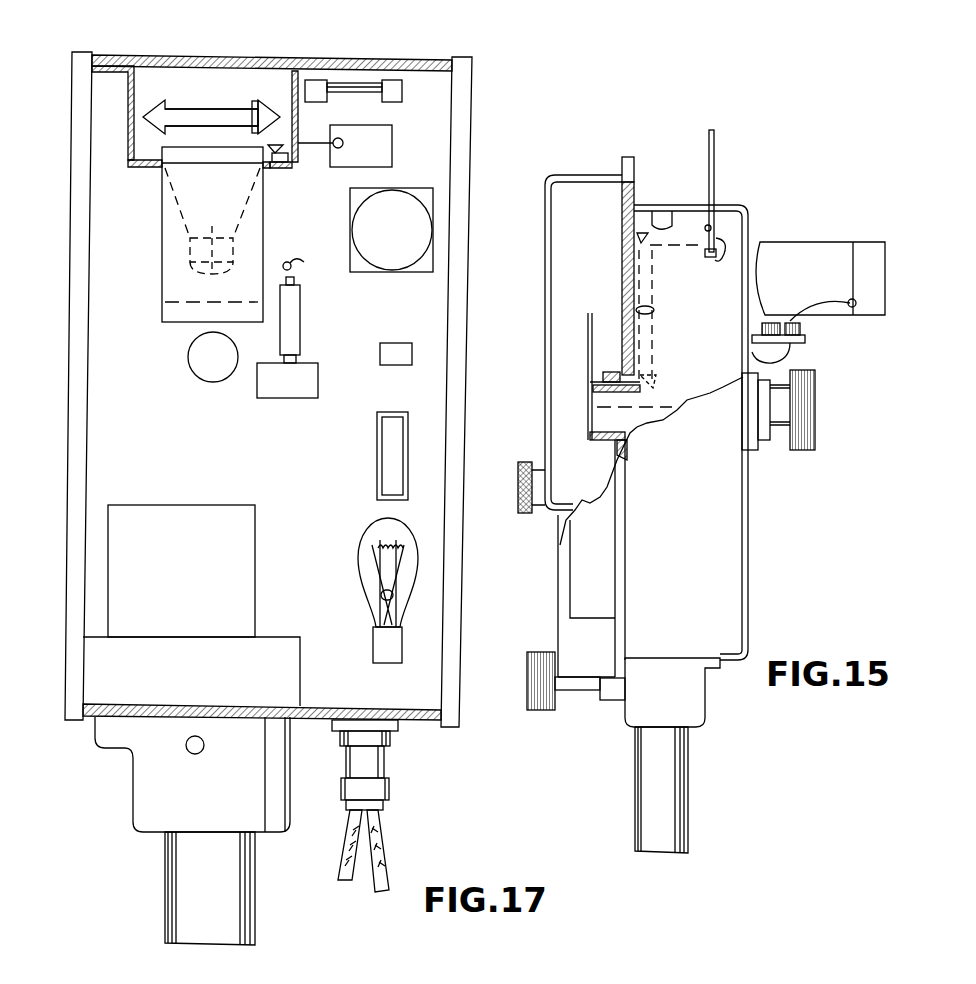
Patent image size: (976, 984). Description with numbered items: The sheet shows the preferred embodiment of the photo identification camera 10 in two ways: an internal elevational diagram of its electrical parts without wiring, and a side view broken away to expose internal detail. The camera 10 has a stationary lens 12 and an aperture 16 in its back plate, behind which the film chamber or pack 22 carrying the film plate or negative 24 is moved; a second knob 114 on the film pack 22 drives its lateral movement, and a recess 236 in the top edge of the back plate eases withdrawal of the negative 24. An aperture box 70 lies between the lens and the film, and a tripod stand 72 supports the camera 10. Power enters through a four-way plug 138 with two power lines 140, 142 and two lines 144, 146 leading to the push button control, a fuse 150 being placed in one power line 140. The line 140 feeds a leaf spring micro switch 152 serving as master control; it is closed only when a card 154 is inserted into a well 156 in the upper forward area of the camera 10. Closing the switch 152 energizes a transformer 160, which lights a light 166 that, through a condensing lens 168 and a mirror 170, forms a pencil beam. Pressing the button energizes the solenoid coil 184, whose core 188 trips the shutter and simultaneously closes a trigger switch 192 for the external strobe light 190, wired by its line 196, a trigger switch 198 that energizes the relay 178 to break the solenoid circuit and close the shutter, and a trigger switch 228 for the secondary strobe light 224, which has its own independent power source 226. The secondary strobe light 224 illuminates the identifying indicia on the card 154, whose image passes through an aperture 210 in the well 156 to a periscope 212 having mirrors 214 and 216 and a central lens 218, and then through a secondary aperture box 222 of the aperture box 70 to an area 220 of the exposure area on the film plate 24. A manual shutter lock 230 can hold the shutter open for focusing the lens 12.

In FIG. 17, the camera 10 is at (67, 546).
In FIG. 15, the camera 10 is at (758, 591).
In FIG. 15, the lens 12 is at (816, 412).
In FIG. 17, the aperture 16 is at (192, 360).
In FIG. 15, the film chamber or pack 22 is at (545, 254).
In FIG. 15, the film plate or negative 24 is at (588, 326).
In FIG. 15, the aperture box 70 is at (627, 436).
In FIG. 17, the tripod stand 72 is at (185, 871).
In FIG. 15, the tripod stand 72 is at (655, 767).
In FIG. 15, the second knob 114 is at (518, 482).
In FIG. 17, the 4-way plug 138 is at (376, 763).
In FIG. 17, the line 140 is at (320, 846).
In FIG. 17, the line 142 is at (348, 872).
In FIG. 17, the line 144 is at (430, 851).
In FIG. 17, the line 146 is at (383, 858).
In FIG. 17, the fuse 150 is at (355, 85).
In FIG. 17, the leaf spring micro switch 152 is at (310, 142).
In FIG. 15, the leaf spring micro switch 152 is at (706, 254).
In FIG. 15, the card 154 is at (714, 165).
In FIG. 17, the well 156 is at (134, 78).
In FIG. 15, the well 156 is at (721, 258).
In FIG. 17, the transformer 160 is at (154, 571).
In FIG. 17, the light 166 is at (372, 528).
In FIG. 17, the condensing lens 168 is at (390, 460).
In FIG. 17, the mirror 170 is at (394, 350).
In FIG. 17, the relay 178 is at (377, 243).
In FIG. 17, the solenoid coil 184 is at (290, 316).
In FIG. 17, the core 188 is at (296, 361).
In FIG. 15, the strobe light 190 is at (833, 262).
In FIG. 17, the trigger switch 192 is at (280, 398).
In FIG. 15, the line 196 is at (829, 305).
In FIG. 17, the trigger switch 198 is at (280, 398).
In FIG. 15, the aperture 210 is at (705, 230).
In FIG. 17, the periscope 212 is at (181, 234).
In FIG. 15, the periscope 212 is at (652, 346).
In FIG. 17, the mirror 214 is at (215, 160).
In FIG. 15, the mirror 214 is at (637, 238).
In FIG. 17, the mirror 216 is at (211, 290).
In FIG. 15, the mirror 216 is at (646, 388).
In FIG. 17, the central lens 218 is at (211, 238).
In FIG. 15, the central lens 218 is at (653, 311).
In FIG. 15, the area 220 is at (603, 376).
In FIG. 15, the secondary aperture box 222 is at (600, 390).
In FIG. 17, the secondary strobe light 224 is at (214, 122).
In FIG. 15, the secondary strobe light 224 is at (668, 218).
In FIG. 17, the independent power source 226 is at (162, 686).
In FIG. 17, the trigger switch 228 is at (338, 418).
In FIG. 17, the manual shutter lock 230 is at (304, 262).
In FIG. 15, the recess 236 is at (626, 165).